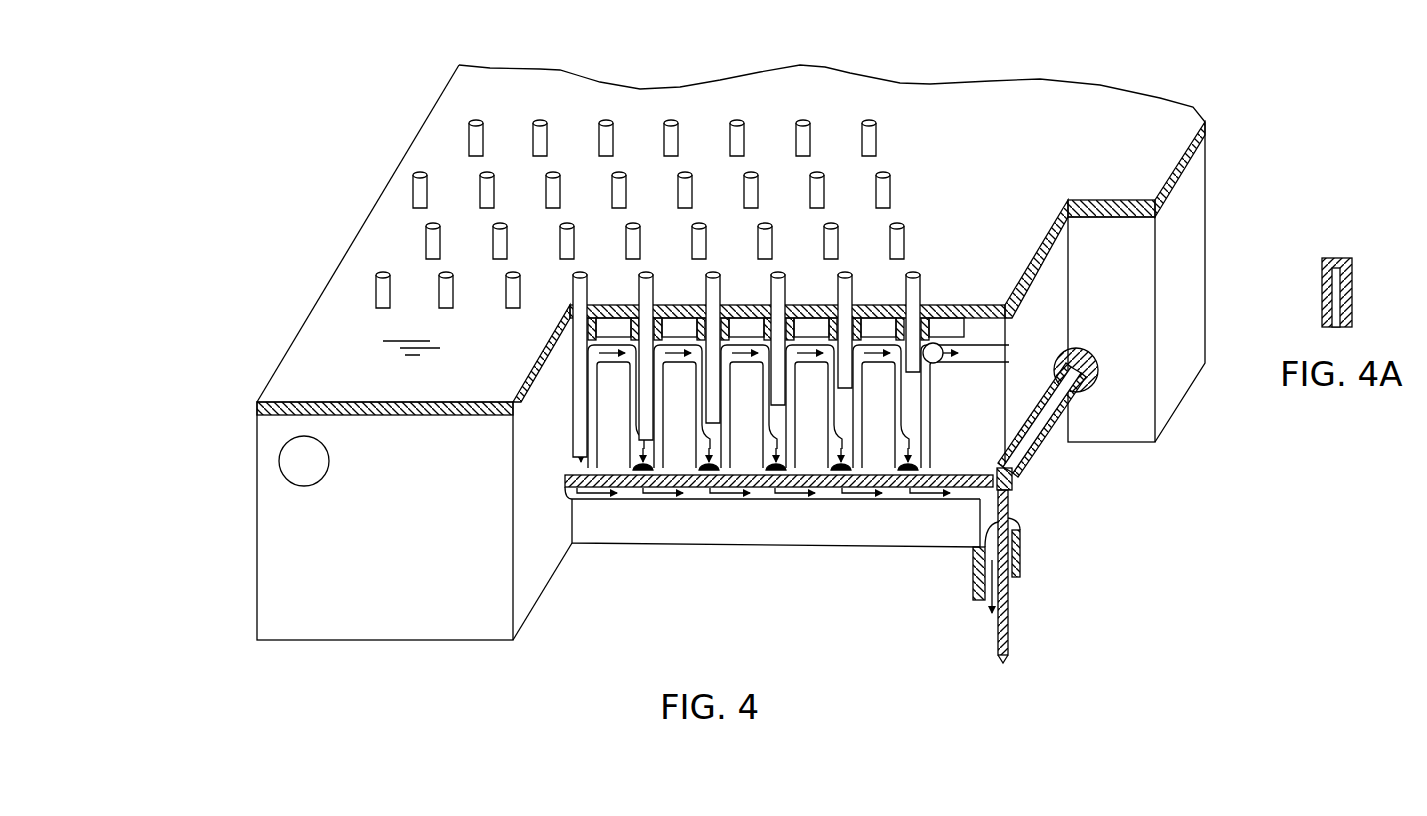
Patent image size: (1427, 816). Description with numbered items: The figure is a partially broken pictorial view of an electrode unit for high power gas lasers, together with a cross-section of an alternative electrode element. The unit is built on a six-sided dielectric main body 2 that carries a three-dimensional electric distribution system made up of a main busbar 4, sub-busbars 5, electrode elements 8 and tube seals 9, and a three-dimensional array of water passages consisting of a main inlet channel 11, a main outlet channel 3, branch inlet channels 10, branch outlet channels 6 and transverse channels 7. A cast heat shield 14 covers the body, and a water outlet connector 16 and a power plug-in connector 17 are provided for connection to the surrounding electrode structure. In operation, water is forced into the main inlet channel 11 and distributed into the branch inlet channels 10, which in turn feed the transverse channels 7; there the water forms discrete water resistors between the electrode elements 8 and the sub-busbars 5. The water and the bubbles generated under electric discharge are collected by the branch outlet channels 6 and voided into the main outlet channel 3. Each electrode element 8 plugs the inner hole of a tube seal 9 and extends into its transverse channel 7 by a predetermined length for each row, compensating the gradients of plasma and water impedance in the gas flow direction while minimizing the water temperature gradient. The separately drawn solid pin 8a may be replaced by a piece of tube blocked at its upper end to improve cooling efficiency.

In FIG. 4, the dielectric main body 2 is at (305, 555).
In FIG. 4, the main outlet channel 3 is at (1093, 381).
In FIG. 4, the main busbar 4 is at (1017, 463).
In FIG. 4, the sub-busbars 5 is at (895, 487).
In FIG. 4, the branch outlet channels 6 is at (823, 500).
In FIG. 4, the transverse channels 7 is at (923, 418).
In FIG. 4, the electrode elements 8 is at (376, 290).
In FIG. 4A, the solid pin 8a is at (1354, 283).
In FIG. 4, the tube seal 9 is at (920, 325).
In FIG. 4, the branch inlet channels 10 is at (943, 352).
In FIG. 4, the main inlet channel 11 is at (292, 460).
In FIG. 4, the cast heat shield 14 is at (1205, 130).
In FIG. 4, the water outlet connector 16 is at (1020, 542).
In FIG. 4, the power plug-in connector 17 is at (1010, 612).